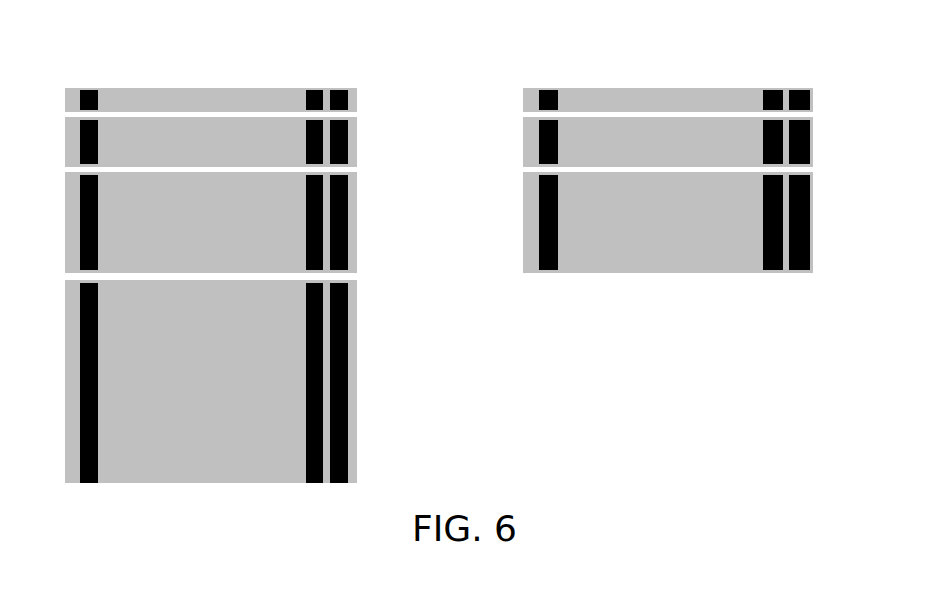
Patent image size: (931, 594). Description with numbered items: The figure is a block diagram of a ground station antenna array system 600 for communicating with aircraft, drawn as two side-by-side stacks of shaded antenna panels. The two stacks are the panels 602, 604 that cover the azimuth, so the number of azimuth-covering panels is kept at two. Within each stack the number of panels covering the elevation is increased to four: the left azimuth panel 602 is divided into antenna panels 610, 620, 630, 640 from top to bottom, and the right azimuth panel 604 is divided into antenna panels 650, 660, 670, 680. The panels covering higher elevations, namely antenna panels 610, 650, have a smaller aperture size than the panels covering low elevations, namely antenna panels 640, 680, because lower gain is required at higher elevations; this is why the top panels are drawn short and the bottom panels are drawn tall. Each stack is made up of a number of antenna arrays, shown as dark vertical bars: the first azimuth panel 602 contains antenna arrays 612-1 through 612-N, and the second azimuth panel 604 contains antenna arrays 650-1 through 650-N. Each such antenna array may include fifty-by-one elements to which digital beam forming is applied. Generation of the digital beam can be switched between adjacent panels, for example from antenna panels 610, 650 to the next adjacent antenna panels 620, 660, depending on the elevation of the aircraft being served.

The ground station antenna array system 600 is at (438, 58).
The azimuth-covering panel 602 is at (73, 87).
The azimuth-covering panel 604 is at (803, 87).
The antenna panel 610 is at (352, 103).
The antenna panel 620 is at (352, 145).
The antenna panel 630 is at (352, 225).
The antenna panel 640 is at (352, 385).
The antenna panel 650 is at (524, 106).
The antenna panel 660 is at (524, 146).
The antenna panel 670 is at (523, 227).
The antenna panel 680 is at (641, 399).
The antenna array 612-1 is at (90, 483).
The antenna array 612-N is at (338, 483).
The antenna array 650-1 is at (549, 483).
The antenna array 650-N is at (805, 483).